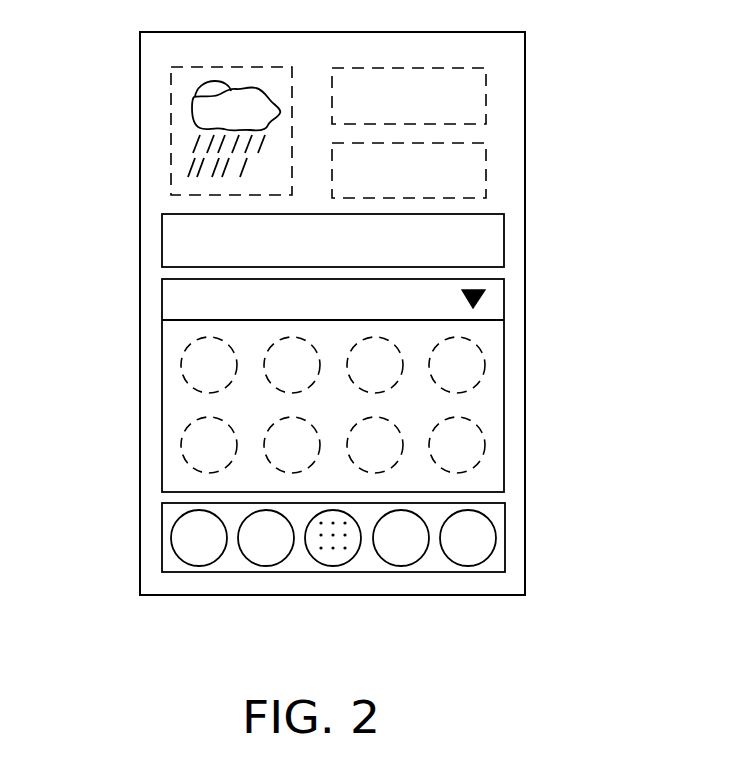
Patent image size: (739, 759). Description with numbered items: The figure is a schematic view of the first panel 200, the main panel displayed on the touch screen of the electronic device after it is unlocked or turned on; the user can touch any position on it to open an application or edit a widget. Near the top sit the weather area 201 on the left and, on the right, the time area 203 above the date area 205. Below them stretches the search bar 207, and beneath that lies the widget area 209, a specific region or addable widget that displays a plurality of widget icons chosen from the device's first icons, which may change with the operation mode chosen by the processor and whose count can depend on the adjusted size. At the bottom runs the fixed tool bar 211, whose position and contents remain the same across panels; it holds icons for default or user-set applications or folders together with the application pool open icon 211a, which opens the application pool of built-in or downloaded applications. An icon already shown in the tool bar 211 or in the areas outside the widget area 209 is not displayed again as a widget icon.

The first panel 200 is at (667, 654).
The weather area 201 is at (171, 110).
The time area 203 is at (486, 97).
The date area 205 is at (486, 170).
The search bar 207 is at (505, 241).
The widget area 209 is at (505, 363).
The fixed tool bar 211 is at (387, 583).
The application pool open icon 211a is at (333, 566).